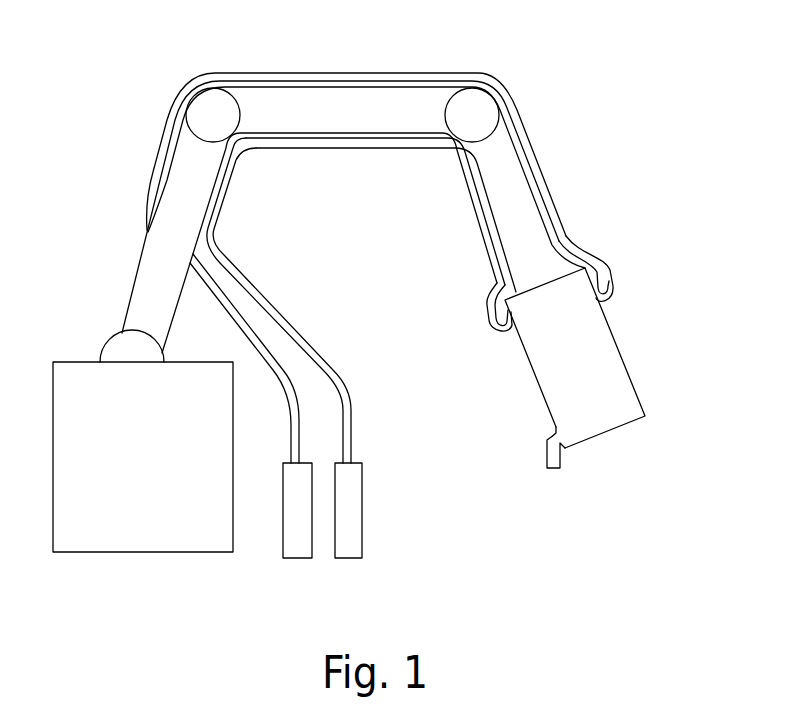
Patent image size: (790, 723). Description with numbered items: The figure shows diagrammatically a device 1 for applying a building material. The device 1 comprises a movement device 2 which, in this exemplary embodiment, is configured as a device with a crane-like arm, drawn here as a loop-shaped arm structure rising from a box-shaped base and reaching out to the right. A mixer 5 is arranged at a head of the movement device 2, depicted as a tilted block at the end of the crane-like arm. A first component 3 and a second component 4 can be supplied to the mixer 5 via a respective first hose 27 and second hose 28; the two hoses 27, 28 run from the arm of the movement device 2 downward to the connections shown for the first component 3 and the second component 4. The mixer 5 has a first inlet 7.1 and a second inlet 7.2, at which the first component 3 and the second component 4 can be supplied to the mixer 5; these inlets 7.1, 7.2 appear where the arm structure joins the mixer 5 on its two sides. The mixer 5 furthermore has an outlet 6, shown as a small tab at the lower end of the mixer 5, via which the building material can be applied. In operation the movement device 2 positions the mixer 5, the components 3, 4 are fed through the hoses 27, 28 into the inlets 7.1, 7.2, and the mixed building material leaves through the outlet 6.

The device 1 is at (146, 73).
The movement device 2 is at (123, 535).
The first component 3 is at (303, 545).
The second component 4 is at (353, 545).
The mixer 5 is at (610, 360).
The outlet 6 is at (557, 472).
The first inlet 7.1 is at (614, 286).
The second inlet 7.2 is at (499, 336).
The first hose 27 is at (254, 348).
The second hose 28 is at (322, 360).